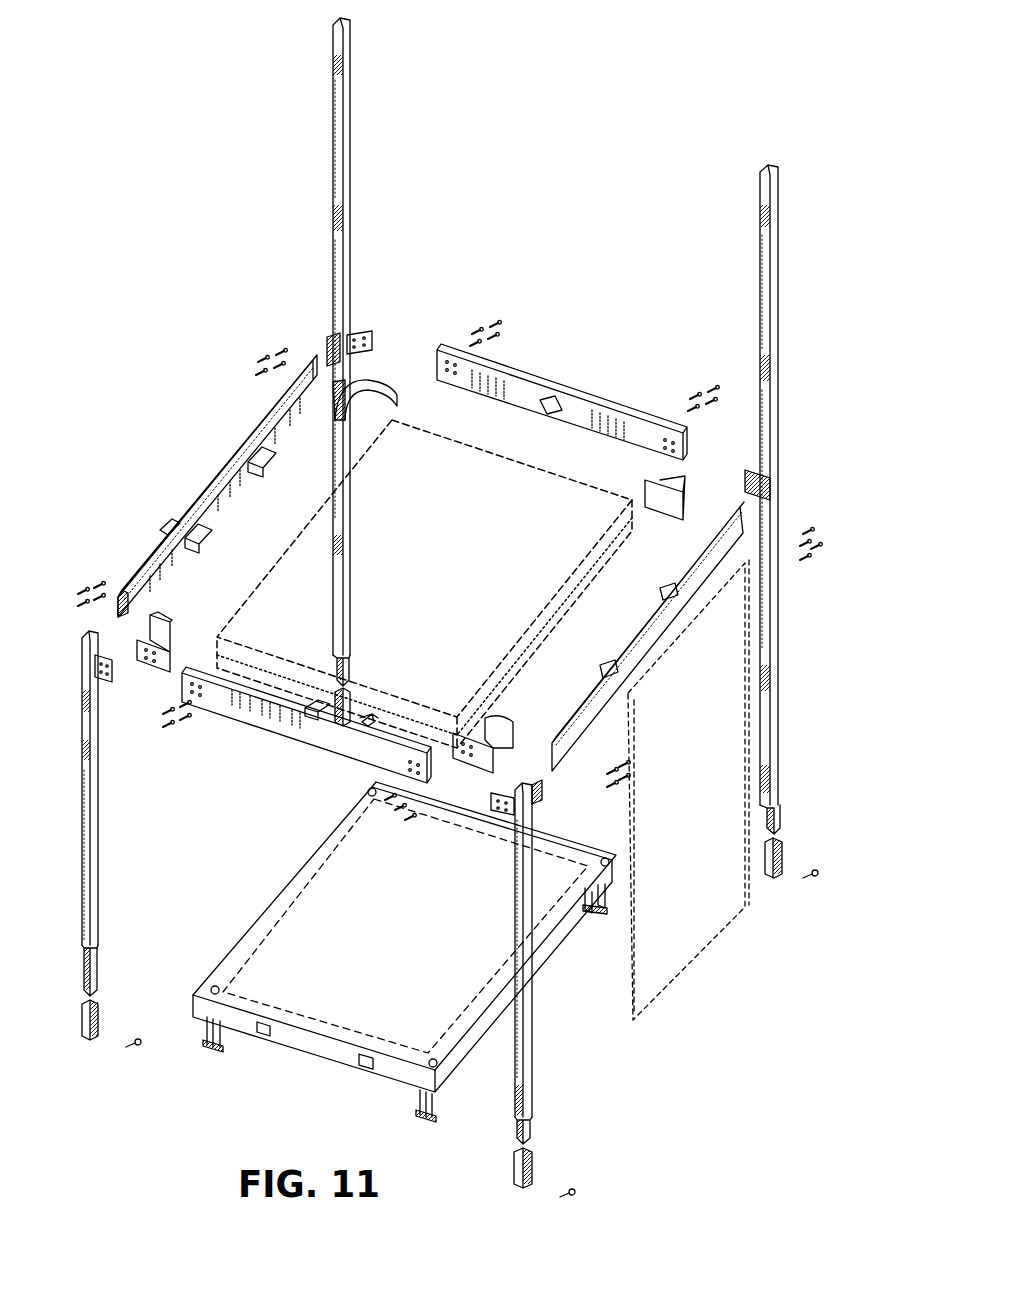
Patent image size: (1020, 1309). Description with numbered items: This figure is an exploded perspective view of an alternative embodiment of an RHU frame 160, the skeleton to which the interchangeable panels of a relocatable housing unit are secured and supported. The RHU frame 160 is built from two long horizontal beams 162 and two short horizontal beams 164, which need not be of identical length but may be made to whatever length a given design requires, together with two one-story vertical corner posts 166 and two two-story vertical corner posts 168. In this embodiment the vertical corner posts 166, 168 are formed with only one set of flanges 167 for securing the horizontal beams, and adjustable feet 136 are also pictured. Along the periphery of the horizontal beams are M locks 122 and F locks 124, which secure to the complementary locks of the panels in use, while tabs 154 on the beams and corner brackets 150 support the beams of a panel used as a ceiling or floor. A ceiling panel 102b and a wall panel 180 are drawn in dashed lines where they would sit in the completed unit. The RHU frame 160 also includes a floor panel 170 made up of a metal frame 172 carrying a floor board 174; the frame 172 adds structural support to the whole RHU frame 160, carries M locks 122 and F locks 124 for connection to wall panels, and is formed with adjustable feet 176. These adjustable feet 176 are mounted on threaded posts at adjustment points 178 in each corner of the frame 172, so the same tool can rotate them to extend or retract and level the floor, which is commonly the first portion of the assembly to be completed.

The two-story vertical corner post 168 is at (332, 177).
The ceiling panel 102b is at (410, 405).
The F lock 124 is at (232, 452).
The long horizontal beam 162 is at (215, 484).
The M lock 122 is at (166, 532).
The short horizontal beam 164 is at (628, 416).
The RHU frame 160 is at (862, 432).
The corner bracket 150 is at (135, 640).
The tab 154 is at (604, 665).
The one-story vertical corner post 166 is at (82, 812).
The frame 172 is at (270, 920).
The floor board 174 is at (343, 865).
The adjustment point 178 is at (213, 985).
The adjustable foot 176 is at (207, 1030).
The floor panel 170 is at (445, 1088).
The adjustable foot 136 is at (535, 1160).
The flange 167 is at (545, 802).
The wall panel 180 is at (700, 920).